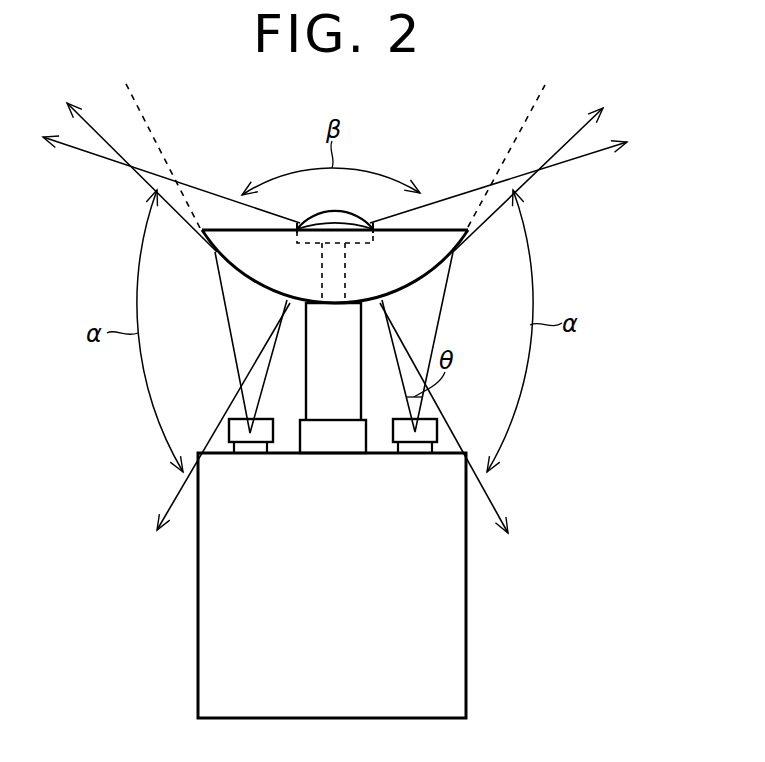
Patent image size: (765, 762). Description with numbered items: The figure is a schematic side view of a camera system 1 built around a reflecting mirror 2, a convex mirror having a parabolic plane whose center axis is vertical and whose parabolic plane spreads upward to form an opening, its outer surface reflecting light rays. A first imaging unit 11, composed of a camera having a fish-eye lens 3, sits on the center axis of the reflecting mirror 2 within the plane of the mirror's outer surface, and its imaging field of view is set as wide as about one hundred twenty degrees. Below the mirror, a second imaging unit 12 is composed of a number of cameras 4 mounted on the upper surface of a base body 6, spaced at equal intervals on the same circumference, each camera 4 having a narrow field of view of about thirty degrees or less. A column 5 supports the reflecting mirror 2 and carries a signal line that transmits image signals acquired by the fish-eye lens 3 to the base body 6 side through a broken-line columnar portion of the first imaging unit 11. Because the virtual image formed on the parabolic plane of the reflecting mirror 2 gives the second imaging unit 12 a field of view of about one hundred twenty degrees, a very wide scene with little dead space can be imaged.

The camera system 1 is at (341, 757).
The reflecting mirror 2 is at (432, 278).
The fish-eye lens 3 is at (358, 217).
The camera 4 is at (250, 453).
The column 5 is at (332, 412).
The base body 6 is at (467, 662).
The first imaging unit 11 is at (352, 193).
The second imaging unit 12 is at (467, 417).